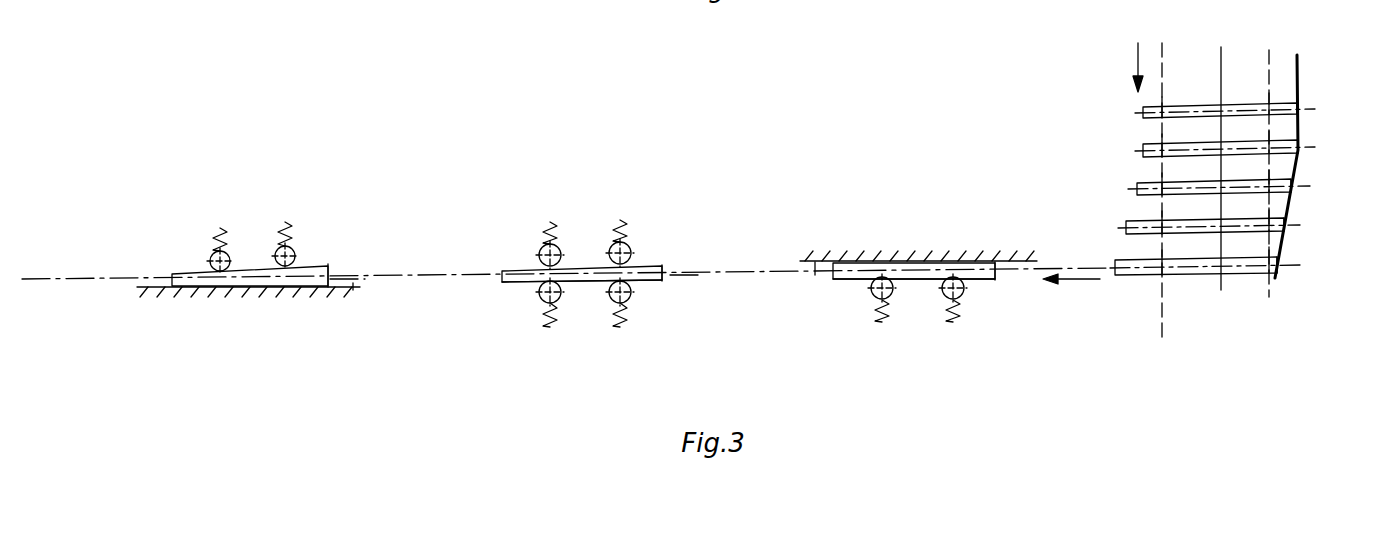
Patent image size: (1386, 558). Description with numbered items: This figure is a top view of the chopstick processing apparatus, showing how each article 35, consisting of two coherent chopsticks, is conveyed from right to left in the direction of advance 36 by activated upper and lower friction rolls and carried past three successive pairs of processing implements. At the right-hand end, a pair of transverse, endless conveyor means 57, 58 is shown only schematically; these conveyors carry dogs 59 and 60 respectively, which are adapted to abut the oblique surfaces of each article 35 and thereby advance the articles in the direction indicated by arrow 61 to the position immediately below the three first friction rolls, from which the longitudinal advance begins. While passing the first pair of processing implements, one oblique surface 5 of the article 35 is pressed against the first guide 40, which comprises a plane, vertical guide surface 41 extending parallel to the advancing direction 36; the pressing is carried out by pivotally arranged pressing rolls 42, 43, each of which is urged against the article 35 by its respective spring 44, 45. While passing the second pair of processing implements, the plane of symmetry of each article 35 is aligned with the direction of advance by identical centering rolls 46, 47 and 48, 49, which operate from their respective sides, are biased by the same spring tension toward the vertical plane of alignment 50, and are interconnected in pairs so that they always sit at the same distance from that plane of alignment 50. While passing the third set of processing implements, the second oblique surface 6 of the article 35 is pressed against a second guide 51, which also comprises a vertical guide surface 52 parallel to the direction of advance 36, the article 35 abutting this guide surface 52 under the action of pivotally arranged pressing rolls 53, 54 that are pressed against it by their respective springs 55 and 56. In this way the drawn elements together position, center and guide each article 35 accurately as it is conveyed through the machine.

The first oblique surface 5 is at (250, 268).
The second oblique surface 6 is at (262, 289).
The article 35 is at (329, 265).
The direction of advance 36 is at (1086, 281).
The first guide 40 is at (822, 260).
The guide surface 41 is at (815, 276).
The pressing roll 42 is at (964, 294).
The pressing roll 43 is at (870, 295).
The spring 44 is at (954, 322).
The spring 45 is at (884, 322).
The centering roll 46 is at (628, 247).
The centering roll 47 is at (630, 299).
The centering roll 48 is at (540, 252).
The centering roll 49 is at (540, 298).
The vertical plane of alignment 50 is at (686, 275).
The second guide 51 is at (336, 289).
The vertical guide surface 52 is at (362, 279).
The pressing roll 53 is at (296, 256).
The pressing roll 54 is at (211, 256).
The spring 55 is at (285, 222).
The spring 56 is at (220, 228).
The transverse endless conveyor means 57 is at (1270, 62).
The transverse endless conveyor means 58 is at (1162, 60).
The dog 59 is at (1269, 100).
The dog 60 is at (1160, 144).
The transverse advancing direction 61 is at (1133, 60).